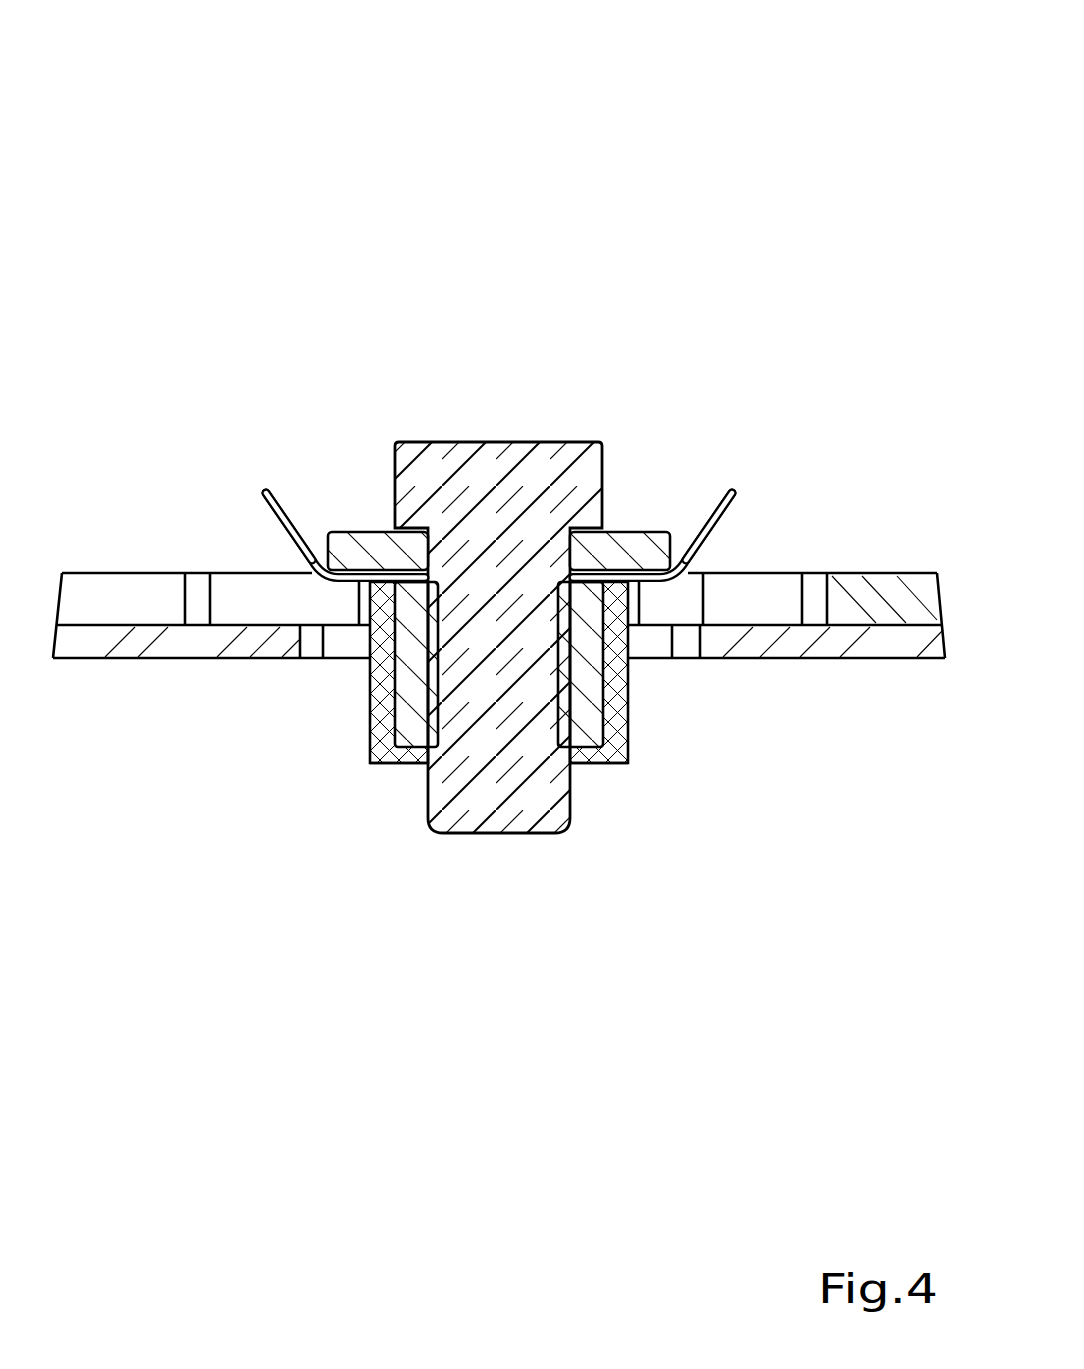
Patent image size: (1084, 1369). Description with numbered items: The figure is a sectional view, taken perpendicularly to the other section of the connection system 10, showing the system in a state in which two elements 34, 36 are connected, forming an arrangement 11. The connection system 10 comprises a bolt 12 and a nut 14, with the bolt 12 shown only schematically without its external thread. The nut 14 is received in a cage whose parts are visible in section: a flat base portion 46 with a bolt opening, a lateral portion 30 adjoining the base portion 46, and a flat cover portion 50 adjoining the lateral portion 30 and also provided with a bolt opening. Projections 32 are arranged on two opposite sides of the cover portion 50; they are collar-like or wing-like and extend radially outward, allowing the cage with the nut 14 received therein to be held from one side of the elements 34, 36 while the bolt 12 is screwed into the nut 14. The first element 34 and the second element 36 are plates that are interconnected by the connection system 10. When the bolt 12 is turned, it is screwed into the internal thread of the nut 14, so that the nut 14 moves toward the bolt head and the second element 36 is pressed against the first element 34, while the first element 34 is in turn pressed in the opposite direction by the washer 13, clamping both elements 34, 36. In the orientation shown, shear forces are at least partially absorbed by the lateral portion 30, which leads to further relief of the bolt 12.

The connection system 10 is at (658, 350).
The arrangement 11 is at (705, 133).
The bolt 12 is at (460, 470).
The washer 13 is at (637, 550).
The nut 14 is at (413, 693).
The lateral portion 30 is at (627, 708).
The projections 32 is at (282, 517).
The first element 34 is at (137, 592).
The second element 36 is at (258, 640).
The base portion 46 is at (603, 755).
The cover portion 50 is at (583, 580).